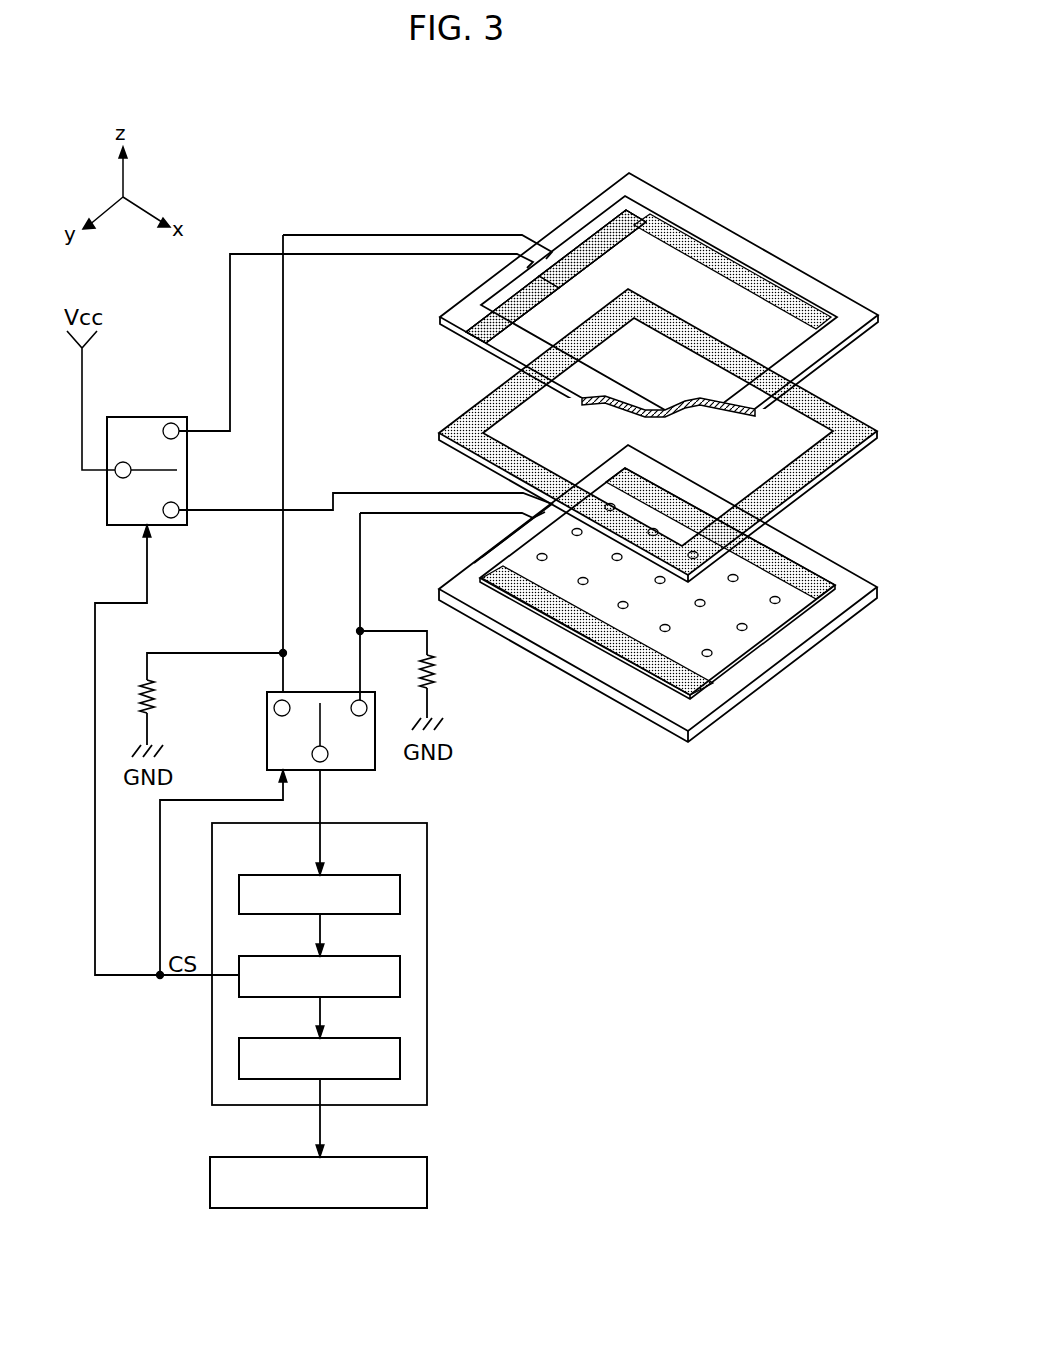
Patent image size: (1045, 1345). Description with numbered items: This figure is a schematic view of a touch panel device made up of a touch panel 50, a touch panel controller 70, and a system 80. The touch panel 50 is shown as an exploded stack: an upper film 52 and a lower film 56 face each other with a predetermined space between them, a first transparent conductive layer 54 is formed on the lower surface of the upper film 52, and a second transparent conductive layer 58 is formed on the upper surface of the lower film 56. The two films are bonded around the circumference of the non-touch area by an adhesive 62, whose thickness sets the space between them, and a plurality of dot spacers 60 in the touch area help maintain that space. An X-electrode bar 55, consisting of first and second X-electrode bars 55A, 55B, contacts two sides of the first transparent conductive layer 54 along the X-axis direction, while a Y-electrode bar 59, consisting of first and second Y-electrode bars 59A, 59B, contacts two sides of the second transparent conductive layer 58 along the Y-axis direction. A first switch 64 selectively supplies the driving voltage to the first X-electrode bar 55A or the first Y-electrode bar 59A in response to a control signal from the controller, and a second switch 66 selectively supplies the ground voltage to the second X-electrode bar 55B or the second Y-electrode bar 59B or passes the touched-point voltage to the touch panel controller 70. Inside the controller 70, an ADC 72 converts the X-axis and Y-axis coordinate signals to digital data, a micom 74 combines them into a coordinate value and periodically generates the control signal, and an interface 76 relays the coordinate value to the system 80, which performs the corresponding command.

The touch panel 50 is at (663, 463).
The upper film 52 is at (655, 187).
The first transparent conductive layer 54 is at (670, 413).
The X-electrode bar 55 is at (648, 237).
The first X-electrode bar 55A is at (650, 205).
The second X-electrode bar 55B is at (797, 317).
The lower film 56 is at (603, 685).
The second transparent conductive layer 58 is at (662, 631).
The Y-electrode bar 59 is at (662, 631).
The first Y-electrode bar 59A is at (778, 747).
The second Y-electrode bar 59B is at (690, 683).
The dot spacers 60 is at (780, 597).
The adhesive 62 is at (843, 422).
The first switch 64 is at (160, 418).
The second switch 66 is at (267, 733).
The touch panel controller 70 is at (347, 964).
The analog-digital converter (ADC) 72 is at (374, 878).
The micom 74 is at (374, 958).
The interface 76 is at (374, 1040).
The system 80 is at (428, 1184).